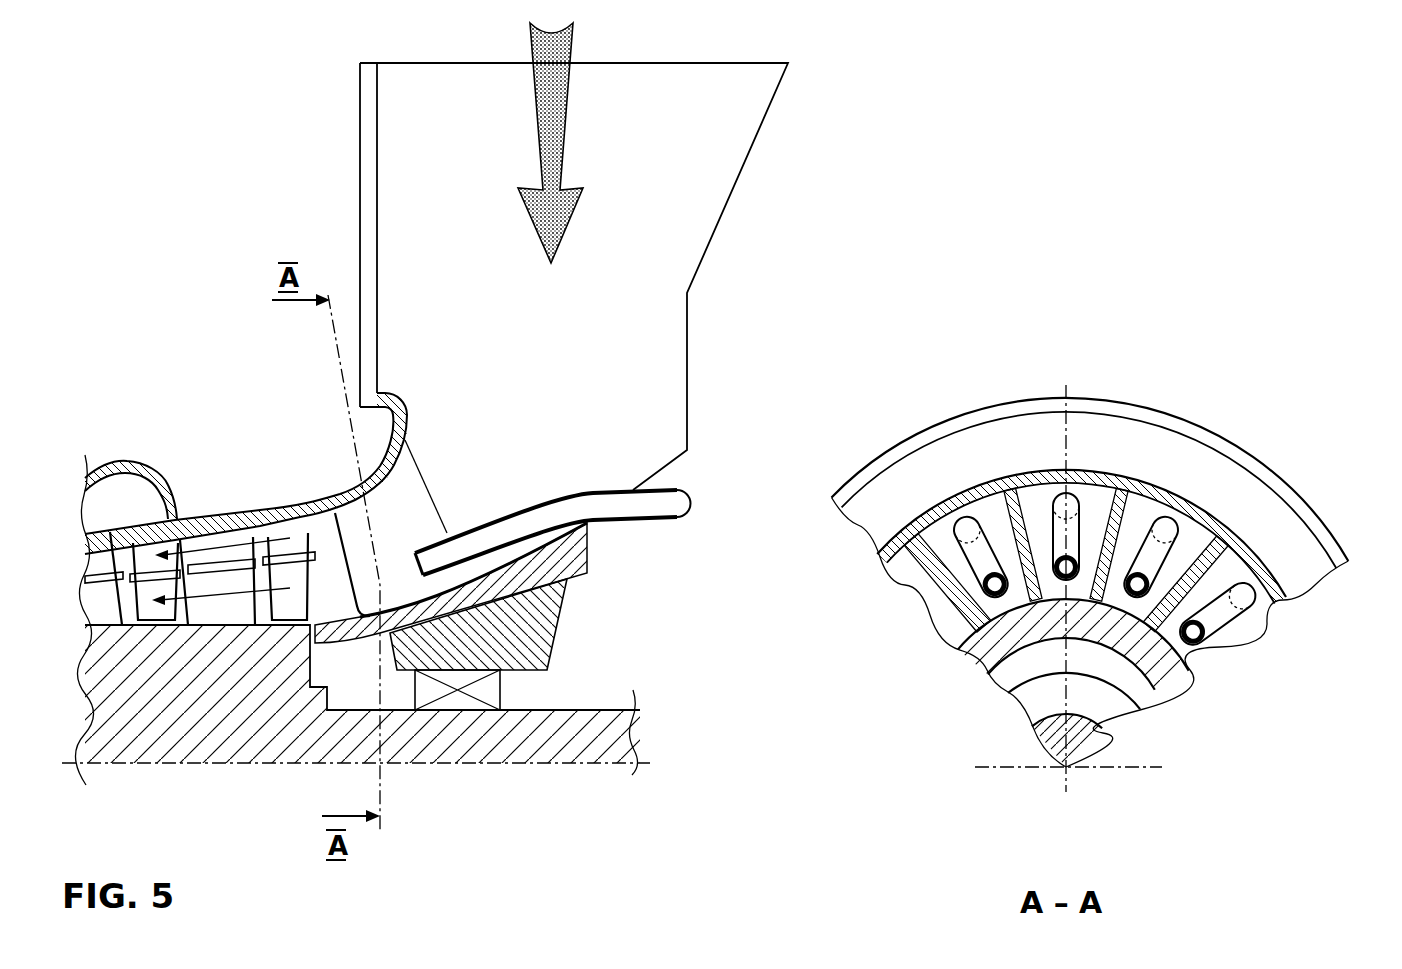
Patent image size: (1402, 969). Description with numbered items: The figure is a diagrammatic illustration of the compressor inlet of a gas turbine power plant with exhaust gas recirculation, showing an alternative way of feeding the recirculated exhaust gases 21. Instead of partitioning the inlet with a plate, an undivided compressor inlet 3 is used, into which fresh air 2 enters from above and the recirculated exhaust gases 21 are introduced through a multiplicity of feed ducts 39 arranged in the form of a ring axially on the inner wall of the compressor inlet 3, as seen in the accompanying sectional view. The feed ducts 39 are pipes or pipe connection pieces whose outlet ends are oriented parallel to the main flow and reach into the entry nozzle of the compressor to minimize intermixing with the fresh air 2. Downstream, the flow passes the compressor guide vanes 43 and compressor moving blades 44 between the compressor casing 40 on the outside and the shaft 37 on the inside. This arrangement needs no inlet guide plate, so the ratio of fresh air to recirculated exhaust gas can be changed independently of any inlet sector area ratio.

The fresh air 2 is at (550, 163).
The compressor inlet 3 is at (732, 220).
The recirculated exhaust gases 21 is at (760, 505).
The shaft 37 is at (528, 744).
The feed ducts 39 is at (637, 507).
The compressor casing 40 is at (260, 517).
The compressor guide vanes 43 is at (290, 605).
The compressor moving blades 44 is at (225, 610).